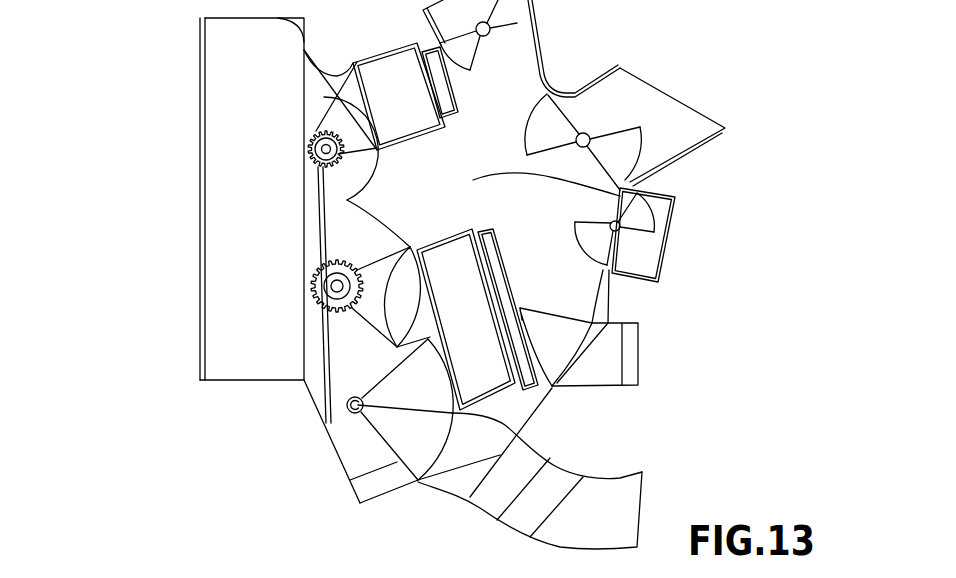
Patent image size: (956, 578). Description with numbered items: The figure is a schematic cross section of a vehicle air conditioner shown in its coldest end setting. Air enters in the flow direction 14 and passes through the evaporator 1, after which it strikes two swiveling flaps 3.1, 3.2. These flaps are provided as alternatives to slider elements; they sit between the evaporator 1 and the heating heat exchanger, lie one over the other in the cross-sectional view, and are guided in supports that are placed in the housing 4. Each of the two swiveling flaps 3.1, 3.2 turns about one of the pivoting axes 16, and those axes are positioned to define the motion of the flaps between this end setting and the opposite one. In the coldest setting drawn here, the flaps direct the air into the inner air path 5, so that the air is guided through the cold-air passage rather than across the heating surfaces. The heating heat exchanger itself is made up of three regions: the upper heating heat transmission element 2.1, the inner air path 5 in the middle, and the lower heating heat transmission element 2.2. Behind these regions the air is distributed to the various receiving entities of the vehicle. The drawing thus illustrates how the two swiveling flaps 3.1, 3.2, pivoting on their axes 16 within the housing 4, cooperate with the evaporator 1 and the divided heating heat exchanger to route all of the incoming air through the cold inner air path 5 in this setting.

The evaporator 1 is at (236, 353).
The flow direction 14 is at (172, 223).
The pivoting axes 16 is at (317, 158).
The swiveling flap 3.1 is at (297, 110).
The swiveling flap 3.2 is at (335, 322).
The upper heating heat transmission element 2.1 is at (415, 112).
The lower heating heat transmission element 2.2 is at (498, 372).
The housing 4 is at (505, 405).
The inner air path 5 is at (621, 226).